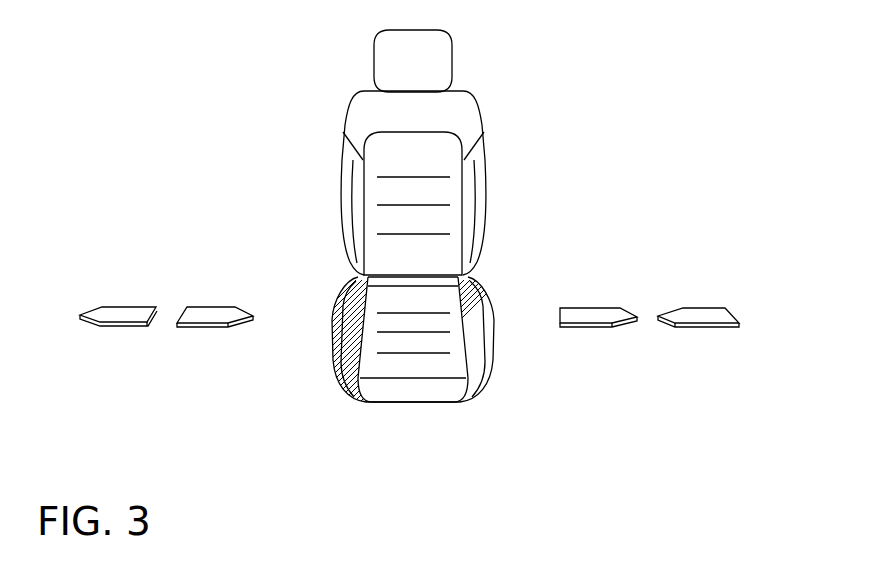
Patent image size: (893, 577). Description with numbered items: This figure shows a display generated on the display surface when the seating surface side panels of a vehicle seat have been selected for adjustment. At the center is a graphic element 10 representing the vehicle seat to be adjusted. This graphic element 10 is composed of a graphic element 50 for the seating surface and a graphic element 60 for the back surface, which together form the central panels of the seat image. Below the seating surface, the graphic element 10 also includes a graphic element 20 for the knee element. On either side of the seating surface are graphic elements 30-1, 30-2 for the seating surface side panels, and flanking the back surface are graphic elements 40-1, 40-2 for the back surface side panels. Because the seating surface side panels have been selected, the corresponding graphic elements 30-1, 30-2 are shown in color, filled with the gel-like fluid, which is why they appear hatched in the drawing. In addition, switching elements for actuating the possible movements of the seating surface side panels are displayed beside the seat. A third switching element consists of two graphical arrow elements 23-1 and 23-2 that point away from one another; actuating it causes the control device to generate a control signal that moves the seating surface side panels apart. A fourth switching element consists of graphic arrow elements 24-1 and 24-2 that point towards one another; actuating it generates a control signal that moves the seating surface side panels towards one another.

The graphic element of the vehicle seat 10 is at (316, 73).
The graphic element for the knee element 20 is at (452, 392).
The graphical arrow element 23-1 is at (209, 315).
The graphical arrow element 23-2 is at (122, 315).
The graphic arrow element 24-1 is at (595, 315).
The graphic arrow element 24-2 is at (705, 315).
The graphic element for the seating surface side panel 30-1 is at (483, 345).
The graphic element for the seating surface side panel 30-2 is at (343, 343).
The graphic element for the back surface side panel 40-1 is at (475, 218).
The graphic element for the back surface side panel 40-2 is at (353, 176).
The graphic element for the seating surface 50 is at (413, 356).
The graphic element for the back surface 60 is at (422, 171).